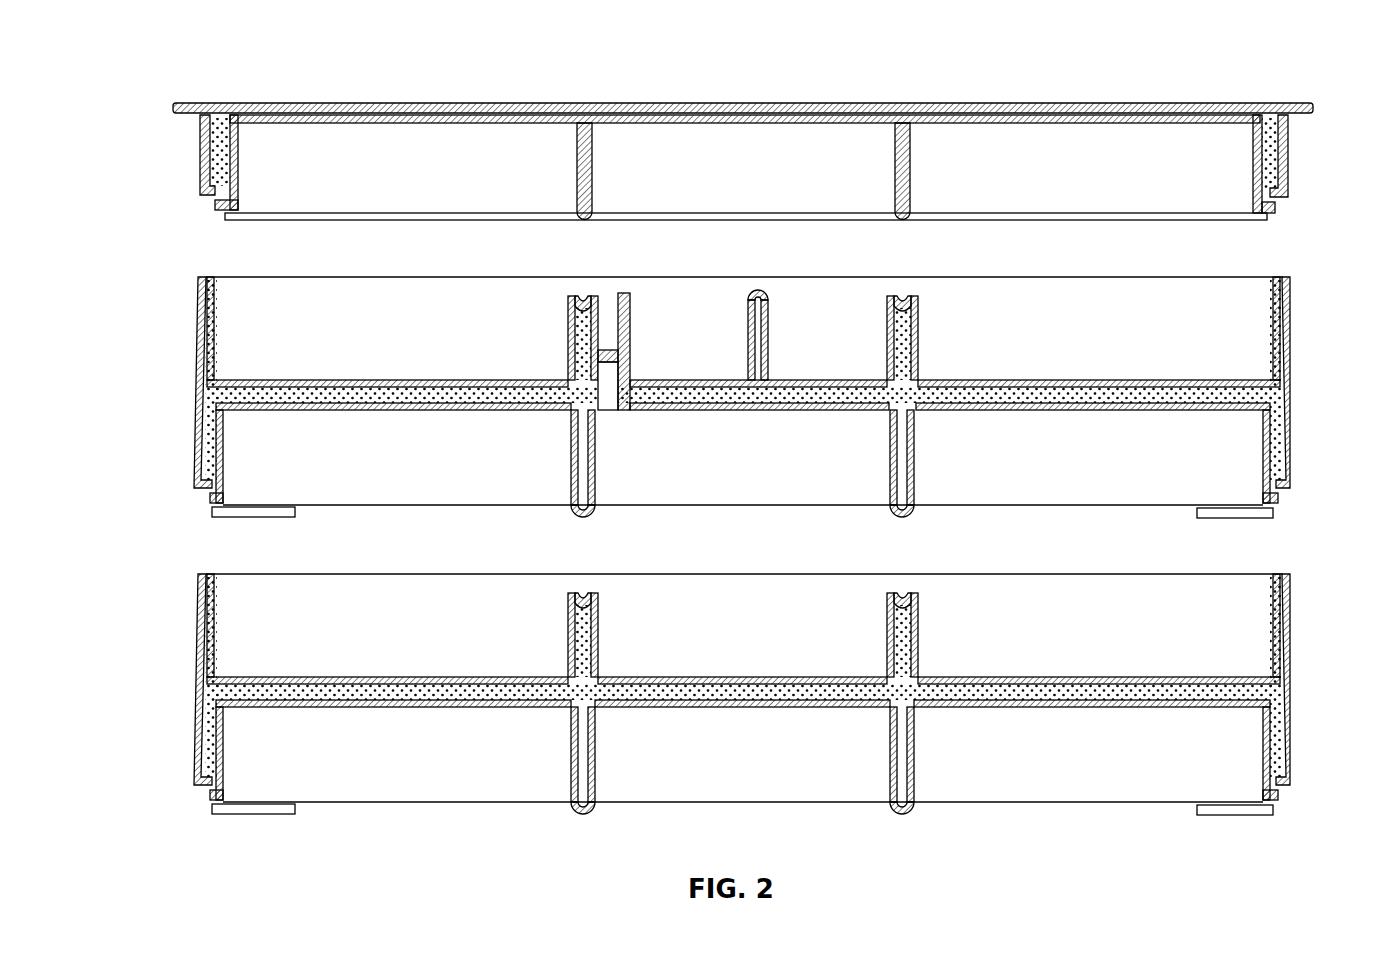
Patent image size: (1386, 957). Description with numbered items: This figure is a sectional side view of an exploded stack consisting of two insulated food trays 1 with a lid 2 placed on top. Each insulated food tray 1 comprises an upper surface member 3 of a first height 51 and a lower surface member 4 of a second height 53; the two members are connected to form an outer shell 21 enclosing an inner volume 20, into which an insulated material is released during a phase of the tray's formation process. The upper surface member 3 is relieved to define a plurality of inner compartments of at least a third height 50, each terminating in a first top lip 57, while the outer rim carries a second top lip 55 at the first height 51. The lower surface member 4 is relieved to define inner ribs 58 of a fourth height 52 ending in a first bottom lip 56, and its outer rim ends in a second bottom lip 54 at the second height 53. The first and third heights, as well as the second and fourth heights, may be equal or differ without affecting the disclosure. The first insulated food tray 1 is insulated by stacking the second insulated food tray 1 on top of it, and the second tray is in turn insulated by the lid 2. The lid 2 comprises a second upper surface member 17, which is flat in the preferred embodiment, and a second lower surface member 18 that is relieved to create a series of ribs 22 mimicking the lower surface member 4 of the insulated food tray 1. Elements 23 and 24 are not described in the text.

The insulated food tray 1 is at (181, 371).
The lid 2 is at (1128, 67).
The upper surface member 3 is at (1315, 679).
The lower surface member 4 is at (1303, 814).
The second upper surface member 17 is at (1250, 103).
The second lower surface member 18 is at (1292, 150).
The inner volume 20 is at (215, 155).
The outer shell 21 is at (200, 172).
The ribs 22 is at (912, 190).
The lid bottom lip 23 is at (1265, 218).
The divider bottom end 24 is at (585, 216).
The third height 50 is at (916, 338).
The first height 51 is at (1292, 325).
The fourth height 52 is at (916, 456).
The second height 53 is at (1290, 470).
The second bottom lip 54 is at (1290, 497).
The second top lip 55 is at (1275, 290).
The first bottom lip 56 is at (900, 512).
The first top lip 57 is at (902, 295).
The inner ribs 58 is at (531, 780).